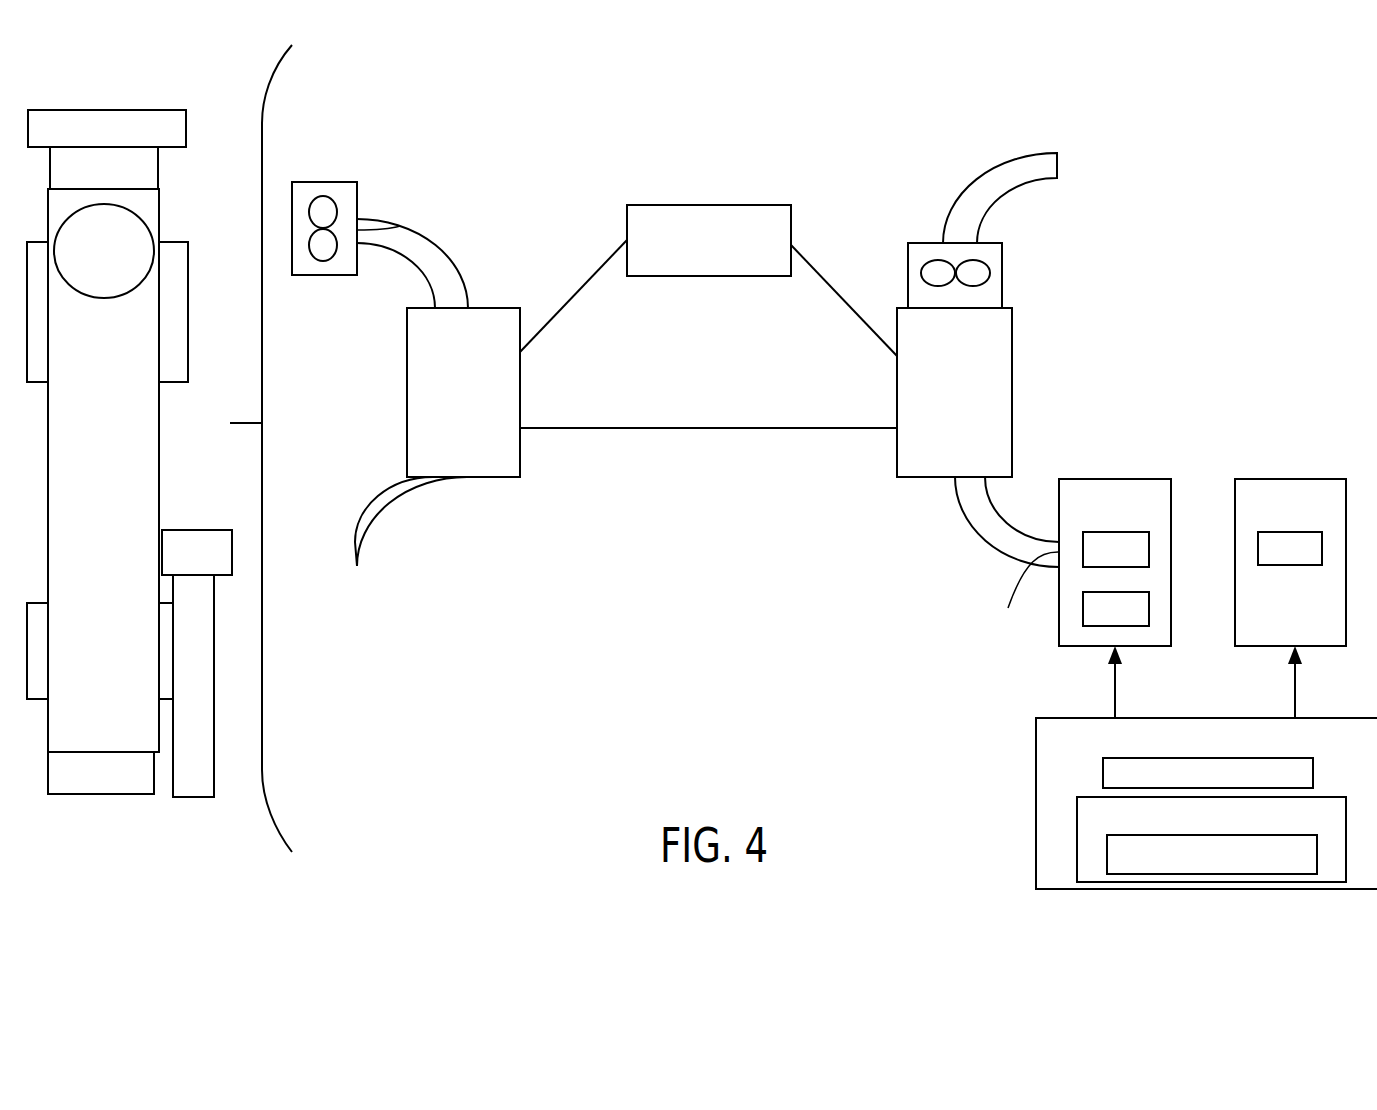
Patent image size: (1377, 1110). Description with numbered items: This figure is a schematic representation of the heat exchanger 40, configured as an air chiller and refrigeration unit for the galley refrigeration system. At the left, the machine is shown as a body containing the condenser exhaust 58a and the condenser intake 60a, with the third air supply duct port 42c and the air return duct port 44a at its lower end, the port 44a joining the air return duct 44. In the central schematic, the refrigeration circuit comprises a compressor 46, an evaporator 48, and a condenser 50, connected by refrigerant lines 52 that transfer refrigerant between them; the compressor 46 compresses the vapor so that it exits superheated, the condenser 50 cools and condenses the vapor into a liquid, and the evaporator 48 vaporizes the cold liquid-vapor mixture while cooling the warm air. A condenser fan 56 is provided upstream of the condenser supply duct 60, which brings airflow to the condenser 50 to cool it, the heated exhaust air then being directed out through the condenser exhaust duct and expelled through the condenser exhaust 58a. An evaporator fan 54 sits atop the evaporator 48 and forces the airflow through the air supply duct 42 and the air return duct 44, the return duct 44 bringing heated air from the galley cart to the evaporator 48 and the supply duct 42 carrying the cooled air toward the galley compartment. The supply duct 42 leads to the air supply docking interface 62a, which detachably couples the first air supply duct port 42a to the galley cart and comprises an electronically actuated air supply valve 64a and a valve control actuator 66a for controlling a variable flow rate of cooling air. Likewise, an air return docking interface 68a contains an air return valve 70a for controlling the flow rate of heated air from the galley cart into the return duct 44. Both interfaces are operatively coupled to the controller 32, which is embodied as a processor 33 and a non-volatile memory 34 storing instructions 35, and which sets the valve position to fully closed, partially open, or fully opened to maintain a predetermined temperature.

The heat exchanger 40 is at (88, 376).
The condenser exhaust 58a is at (87, 180).
The condenser intake 60a is at (86, 266).
The third air supply duct port 42c is at (82, 783).
The air return duct port 44a is at (179, 563).
The air return duct 44 is at (181, 696).
The condenser fan 56 is at (325, 182).
The condenser supply duct 60 is at (445, 248).
The condenser 50 is at (451, 405).
The compressor 46 is at (695, 253).
The refrigerant lines 52 is at (585, 283).
The evaporator fan 54 is at (925, 243).
The evaporator 48 is at (941, 405).
The air supply duct 42 is at (965, 521).
The first air supply duct port 42a is at (1019, 595).
The air supply docking interface 62a is at (1098, 513).
The electronically actuated air supply valve 64a is at (1098, 558).
The valve control actuator 66a is at (1098, 616).
The air return docking interface 68a is at (1272, 513).
The air return valve 70a is at (1272, 558).
The controller 32 is at (1290, 751).
The processor 33 is at (1285, 783).
The memory 34 is at (1270, 831).
The instructions 35 is at (1302, 870).